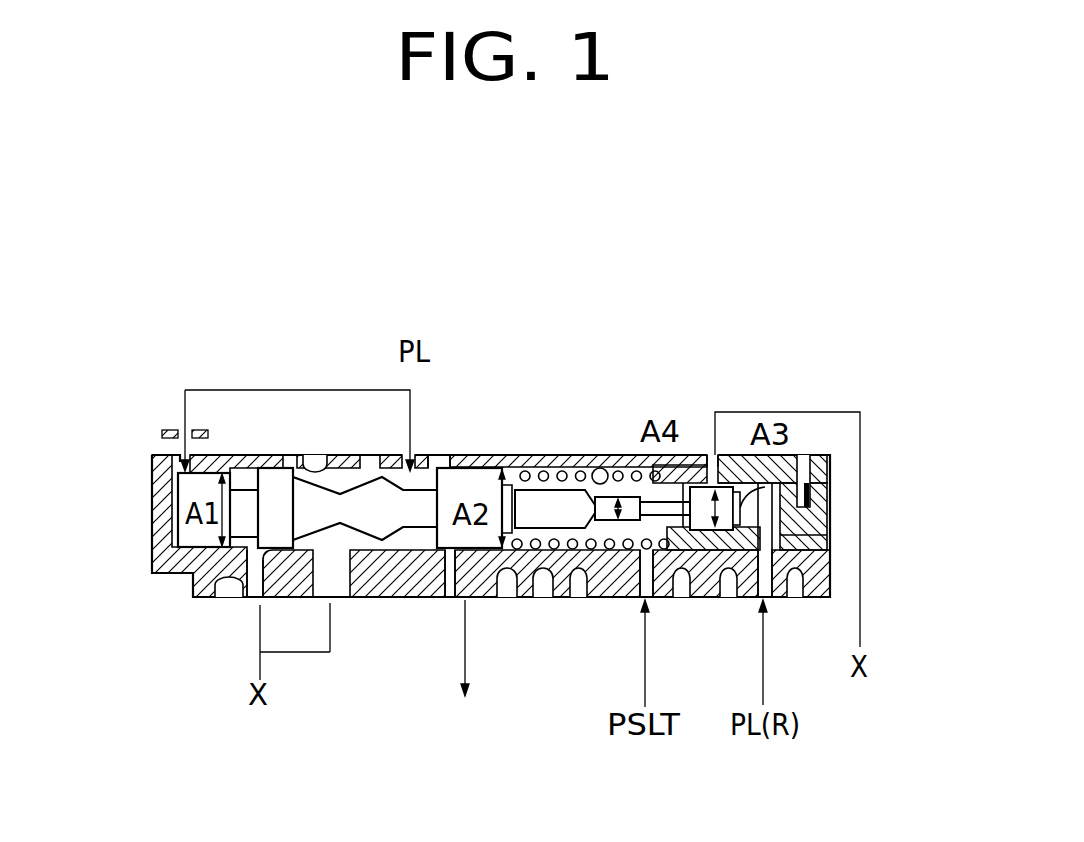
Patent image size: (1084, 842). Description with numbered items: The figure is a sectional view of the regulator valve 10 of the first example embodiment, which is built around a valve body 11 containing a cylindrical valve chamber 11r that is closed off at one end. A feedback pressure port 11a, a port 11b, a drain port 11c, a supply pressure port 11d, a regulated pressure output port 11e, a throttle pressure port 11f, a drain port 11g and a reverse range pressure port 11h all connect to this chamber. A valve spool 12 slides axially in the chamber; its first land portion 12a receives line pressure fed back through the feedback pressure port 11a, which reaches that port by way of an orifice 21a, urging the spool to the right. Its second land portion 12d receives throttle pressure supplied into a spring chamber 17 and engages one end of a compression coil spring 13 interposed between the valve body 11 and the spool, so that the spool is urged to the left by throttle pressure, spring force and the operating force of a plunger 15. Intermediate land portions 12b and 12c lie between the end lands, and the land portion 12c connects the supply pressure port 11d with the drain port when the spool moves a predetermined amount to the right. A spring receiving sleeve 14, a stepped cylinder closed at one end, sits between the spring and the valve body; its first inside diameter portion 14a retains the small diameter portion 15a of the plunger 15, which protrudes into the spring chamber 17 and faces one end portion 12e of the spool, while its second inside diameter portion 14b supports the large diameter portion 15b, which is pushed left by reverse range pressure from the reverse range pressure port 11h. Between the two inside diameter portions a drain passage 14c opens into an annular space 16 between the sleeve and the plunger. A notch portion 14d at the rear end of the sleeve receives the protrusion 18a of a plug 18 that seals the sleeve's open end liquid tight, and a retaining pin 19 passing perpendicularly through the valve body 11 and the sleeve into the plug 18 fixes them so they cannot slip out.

The regulator valve 10 is at (477, 387).
The valve body 11 is at (147, 578).
The feedback pressure port 11a is at (175, 452).
The port 11b is at (240, 598).
The drain port 11c is at (350, 582).
The supply pressure port 11d is at (422, 455).
The regulated pressure output port 11e is at (447, 555).
The throttle pressure port 11f is at (637, 597).
The drain port 11g is at (710, 455).
The reverse range pressure port 11h is at (758, 598).
The valve chamber 11r is at (315, 465).
The valve spool 12 is at (415, 542).
The first land portion 12a is at (213, 473).
The intermediate land portion 12b is at (277, 470).
The intermediate land portion 12c is at (392, 470).
The second land portion 12d is at (472, 468).
The end portion of the valve spool 12e is at (528, 560).
The compression coil spring 13 is at (563, 468).
The spring receiving sleeve 14 is at (800, 598).
The first inside diameter portion 14a is at (610, 597).
The second inside diameter portion 14b is at (733, 455).
The drain passage 14c is at (695, 460).
The notch portion 14d is at (832, 547).
The plunger 15 is at (650, 556).
The small diameter portion 15a is at (632, 468).
The large diameter portion 15b is at (788, 452).
The annular space 16 is at (690, 560).
The spring chamber 17 is at (596, 468).
The plug 18 is at (832, 502).
The protrusion 18a is at (832, 532).
The retaining pin 19 is at (828, 473).
The orifice 21a is at (180, 437).